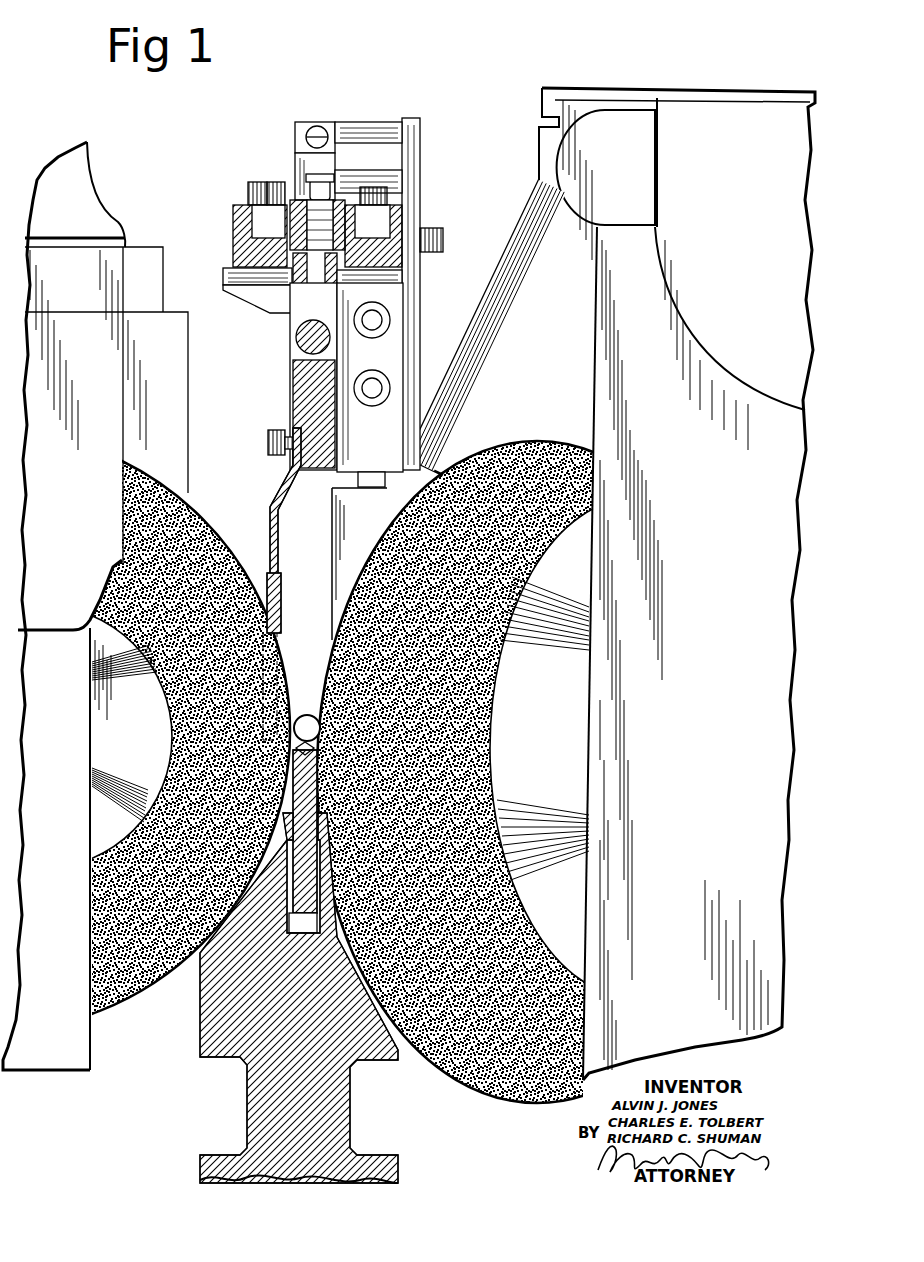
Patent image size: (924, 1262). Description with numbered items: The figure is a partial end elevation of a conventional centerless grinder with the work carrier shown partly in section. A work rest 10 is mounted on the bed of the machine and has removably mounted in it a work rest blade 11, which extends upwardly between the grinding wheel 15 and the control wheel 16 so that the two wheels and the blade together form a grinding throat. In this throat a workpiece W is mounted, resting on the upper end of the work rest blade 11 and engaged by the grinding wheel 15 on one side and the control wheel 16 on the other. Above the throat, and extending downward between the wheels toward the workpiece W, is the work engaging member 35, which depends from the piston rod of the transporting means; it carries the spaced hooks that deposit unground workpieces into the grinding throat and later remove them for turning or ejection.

The work rest 10 is at (383, 1165).
The work rest blade 11 is at (200, 973).
The grinding wheel 15 is at (360, 562).
The control wheel 16 is at (201, 512).
The work engaging member 35 is at (276, 498).
The workpiece W is at (306, 714).